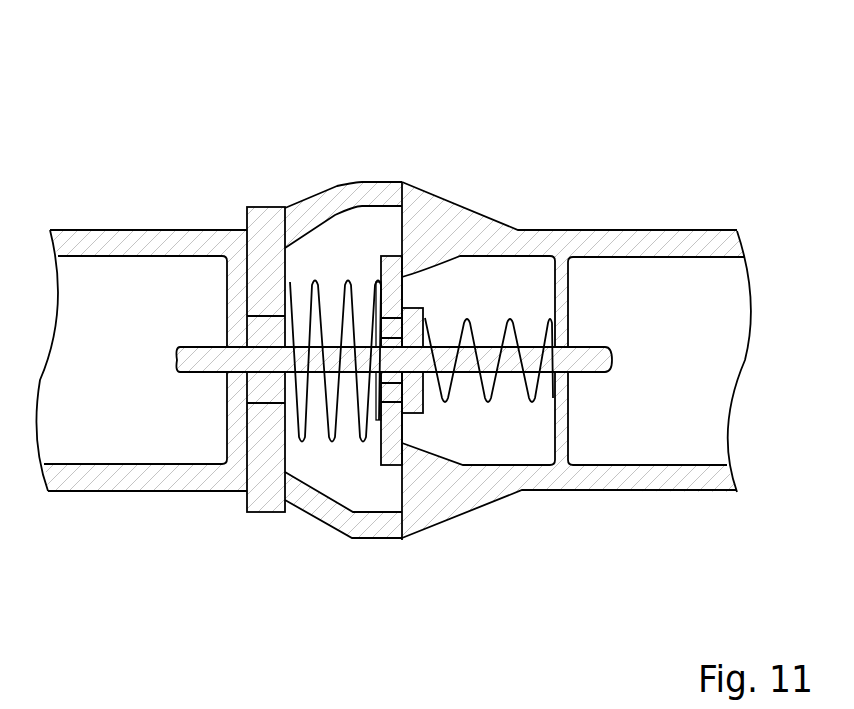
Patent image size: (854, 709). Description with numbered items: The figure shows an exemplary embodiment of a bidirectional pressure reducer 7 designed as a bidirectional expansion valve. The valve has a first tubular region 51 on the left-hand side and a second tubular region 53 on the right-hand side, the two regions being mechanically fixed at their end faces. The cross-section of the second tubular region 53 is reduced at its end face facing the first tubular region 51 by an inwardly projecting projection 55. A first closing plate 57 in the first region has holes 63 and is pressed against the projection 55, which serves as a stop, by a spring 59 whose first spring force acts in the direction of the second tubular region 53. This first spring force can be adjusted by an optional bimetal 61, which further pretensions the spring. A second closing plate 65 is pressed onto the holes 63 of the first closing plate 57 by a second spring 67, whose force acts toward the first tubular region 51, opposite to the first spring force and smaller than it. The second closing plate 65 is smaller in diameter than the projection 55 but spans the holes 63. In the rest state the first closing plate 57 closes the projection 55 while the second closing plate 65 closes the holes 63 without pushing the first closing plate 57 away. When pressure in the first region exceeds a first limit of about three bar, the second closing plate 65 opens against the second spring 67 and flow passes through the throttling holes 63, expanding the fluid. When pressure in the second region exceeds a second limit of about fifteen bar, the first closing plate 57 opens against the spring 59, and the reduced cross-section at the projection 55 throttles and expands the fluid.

The bidirectional pressure reducer 7 is at (512, 145).
The first tubular region 51 is at (202, 510).
The second tubular region 53 is at (609, 505).
The projection 55 is at (410, 447).
The first closing plate 57 is at (390, 277).
The spring 59 is at (330, 287).
The bimetal 61 is at (267, 455).
The holes 63 is at (393, 392).
The second closing plate 65 is at (412, 343).
The second spring 67 is at (500, 337).